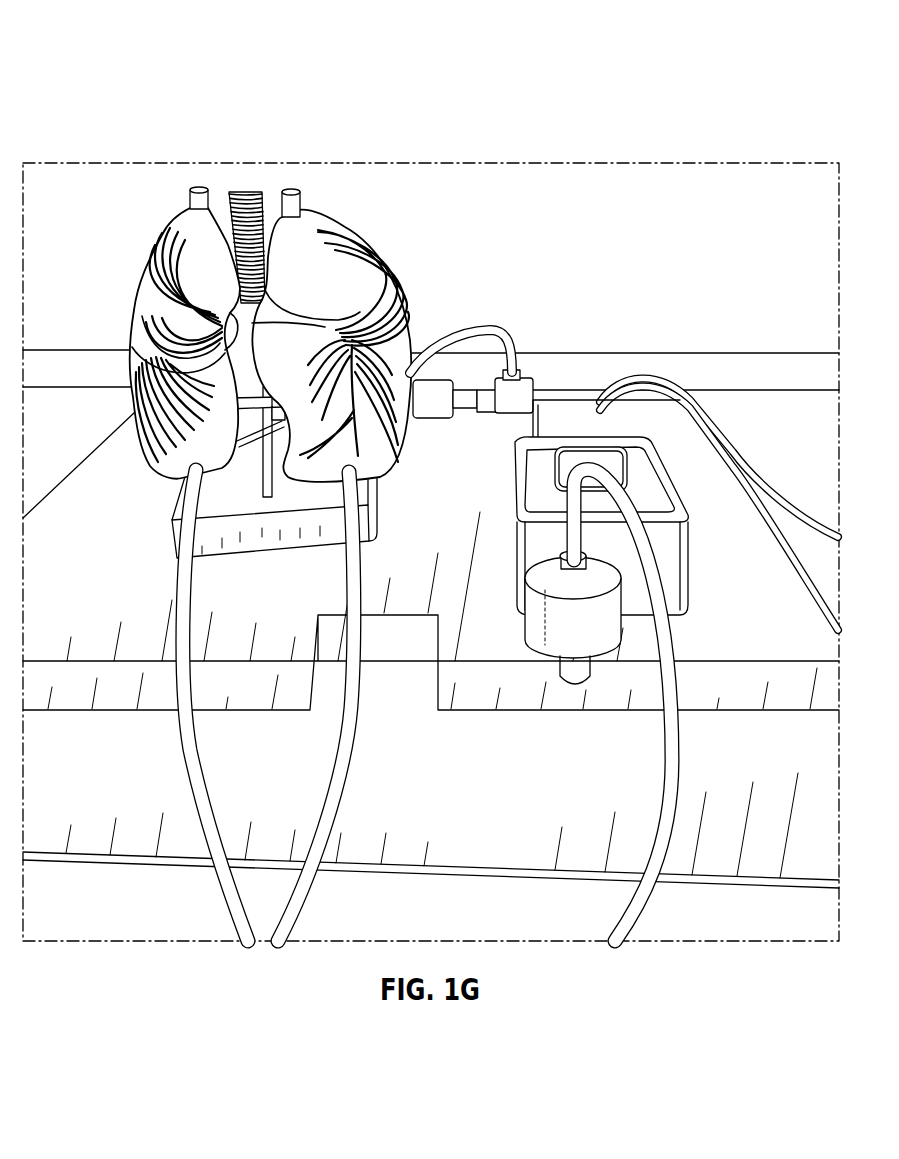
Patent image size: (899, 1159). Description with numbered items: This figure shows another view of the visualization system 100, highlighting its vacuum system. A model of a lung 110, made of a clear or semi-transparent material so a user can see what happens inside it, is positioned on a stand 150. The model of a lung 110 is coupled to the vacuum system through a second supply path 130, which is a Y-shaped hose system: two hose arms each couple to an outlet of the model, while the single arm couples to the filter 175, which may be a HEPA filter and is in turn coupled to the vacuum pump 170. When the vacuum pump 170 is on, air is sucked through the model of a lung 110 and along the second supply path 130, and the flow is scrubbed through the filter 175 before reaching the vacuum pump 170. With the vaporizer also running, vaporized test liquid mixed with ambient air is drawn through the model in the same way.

The system 100 is at (103, 44).
The model of a lung 110 is at (380, 258).
The second supply path 130 is at (308, 880).
The stand 150 is at (183, 512).
The vacuum pump 170 is at (585, 457).
The filter 175 is at (567, 637).